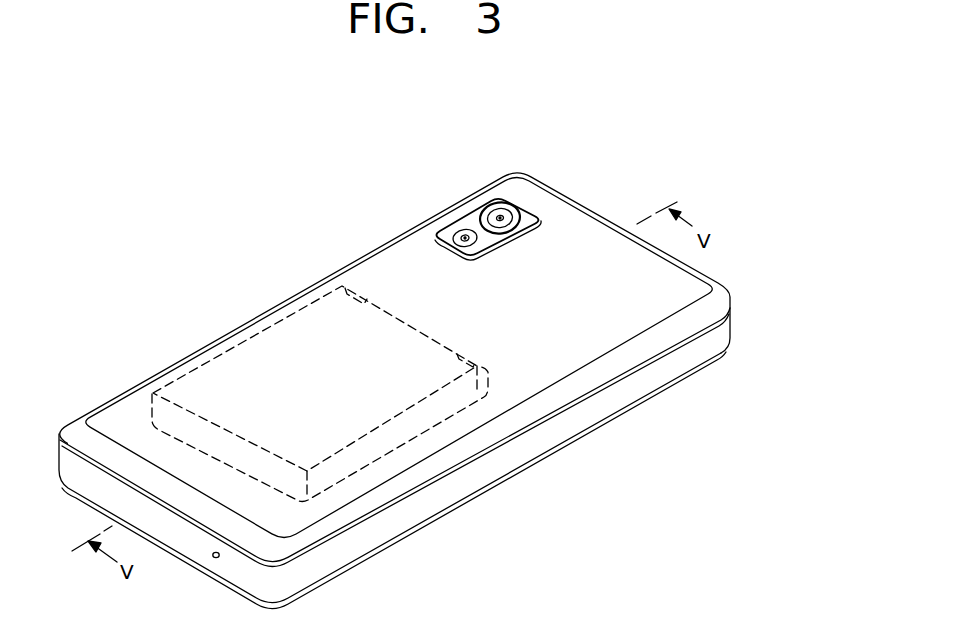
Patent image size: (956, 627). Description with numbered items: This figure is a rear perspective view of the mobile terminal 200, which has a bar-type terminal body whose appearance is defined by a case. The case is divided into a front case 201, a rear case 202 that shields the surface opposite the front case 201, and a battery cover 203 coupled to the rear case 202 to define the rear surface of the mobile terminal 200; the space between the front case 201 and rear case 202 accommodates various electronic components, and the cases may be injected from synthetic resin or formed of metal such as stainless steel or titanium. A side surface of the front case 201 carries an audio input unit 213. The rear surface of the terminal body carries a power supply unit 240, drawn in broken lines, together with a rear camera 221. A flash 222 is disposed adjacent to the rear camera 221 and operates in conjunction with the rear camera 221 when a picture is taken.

The mobile terminal 200 is at (232, 282).
The front case 201 is at (717, 357).
The rear case 202 is at (722, 325).
The battery cover 203 is at (717, 295).
The audio input unit 213 is at (213, 557).
The rear camera 221 is at (500, 218).
The flash 222 is at (465, 238).
The power supply unit 240 is at (225, 362).